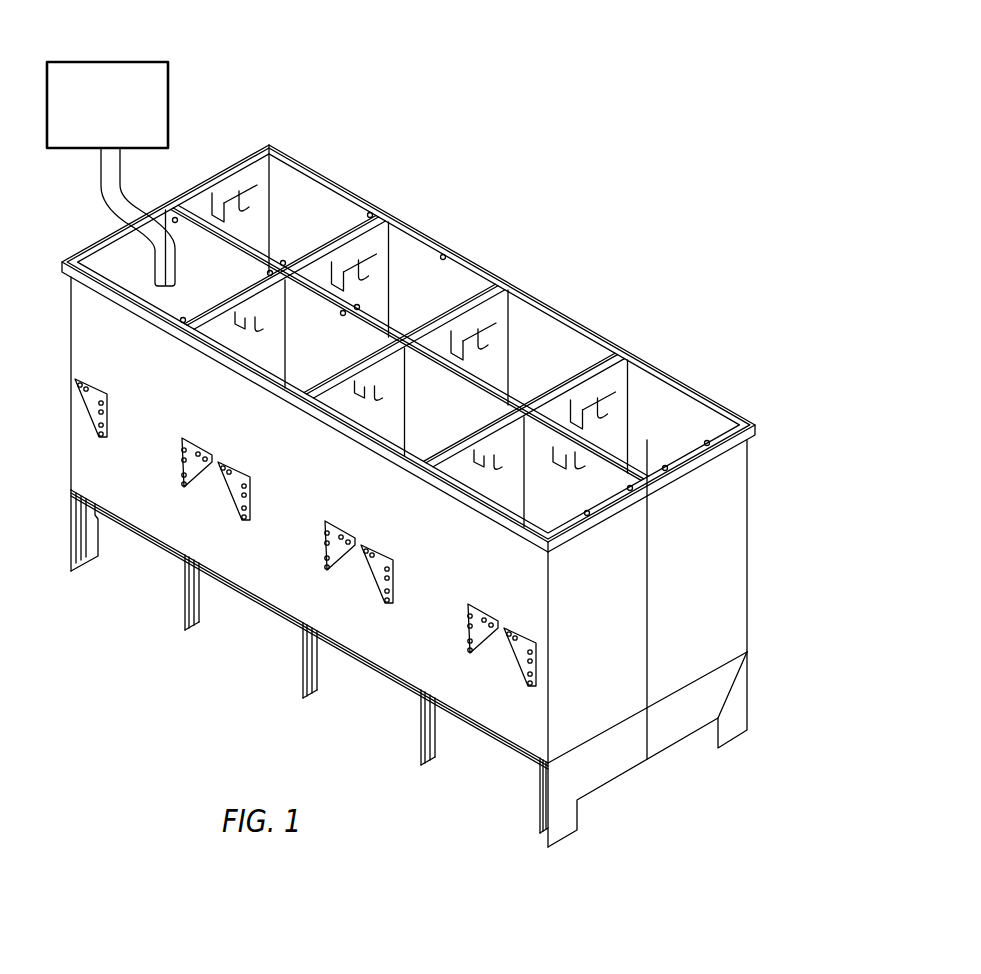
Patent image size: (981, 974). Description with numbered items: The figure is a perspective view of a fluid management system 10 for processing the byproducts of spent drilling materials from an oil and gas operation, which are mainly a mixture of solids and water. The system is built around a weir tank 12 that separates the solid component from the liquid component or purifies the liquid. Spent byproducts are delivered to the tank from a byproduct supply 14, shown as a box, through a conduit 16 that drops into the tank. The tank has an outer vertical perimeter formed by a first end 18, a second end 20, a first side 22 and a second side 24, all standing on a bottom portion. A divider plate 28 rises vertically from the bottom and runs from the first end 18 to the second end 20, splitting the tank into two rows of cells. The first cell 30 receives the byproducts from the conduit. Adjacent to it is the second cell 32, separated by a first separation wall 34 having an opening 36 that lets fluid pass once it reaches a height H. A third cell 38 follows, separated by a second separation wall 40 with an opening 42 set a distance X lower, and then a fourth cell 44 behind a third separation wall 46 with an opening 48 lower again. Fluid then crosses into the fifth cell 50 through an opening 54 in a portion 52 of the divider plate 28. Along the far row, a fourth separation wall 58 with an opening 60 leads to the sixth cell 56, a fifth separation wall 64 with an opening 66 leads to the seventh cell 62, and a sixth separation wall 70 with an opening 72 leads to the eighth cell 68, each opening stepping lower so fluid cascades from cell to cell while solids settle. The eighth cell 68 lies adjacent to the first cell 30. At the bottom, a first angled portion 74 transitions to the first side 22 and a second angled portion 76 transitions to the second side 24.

The fluid management system 10 is at (612, 130).
The weir tank 12 is at (727, 523).
The byproduct supply 14 is at (97, 112).
The conduit 16 is at (105, 180).
The first end 18 is at (218, 163).
The second end 20 is at (728, 600).
The first side 22 is at (274, 498).
The second side 24 is at (582, 357).
The divider plate 28 is at (197, 293).
The first cell 30 is at (117, 281).
The second cell 32 is at (253, 355).
The first separation wall 34 is at (235, 342).
The opening 36 is at (265, 307).
The third cell 38 is at (367, 426).
The second separation wall 40 is at (357, 404).
The opening 42 is at (388, 380).
The fourth cell 44 is at (496, 501).
The third separation wall 46 is at (478, 478).
The opening 48 is at (495, 453).
The fifth cell 50 is at (650, 451).
The portion of the divider plate 52 is at (539, 505).
The opening 54 is at (573, 467).
The sixth cell 56 is at (527, 387).
The fourth separation wall 58 is at (605, 427).
The opening 60 is at (612, 425).
The seventh cell 62 is at (414, 312).
The fifth separation wall 64 is at (540, 338).
The opening 66 is at (499, 367).
The eighth cell 68 is at (287, 236).
The sixth separation wall 70 is at (372, 289).
The opening 72 is at (370, 295).
The first angled portion 74 is at (563, 781).
The second angled portion 76 is at (725, 692).